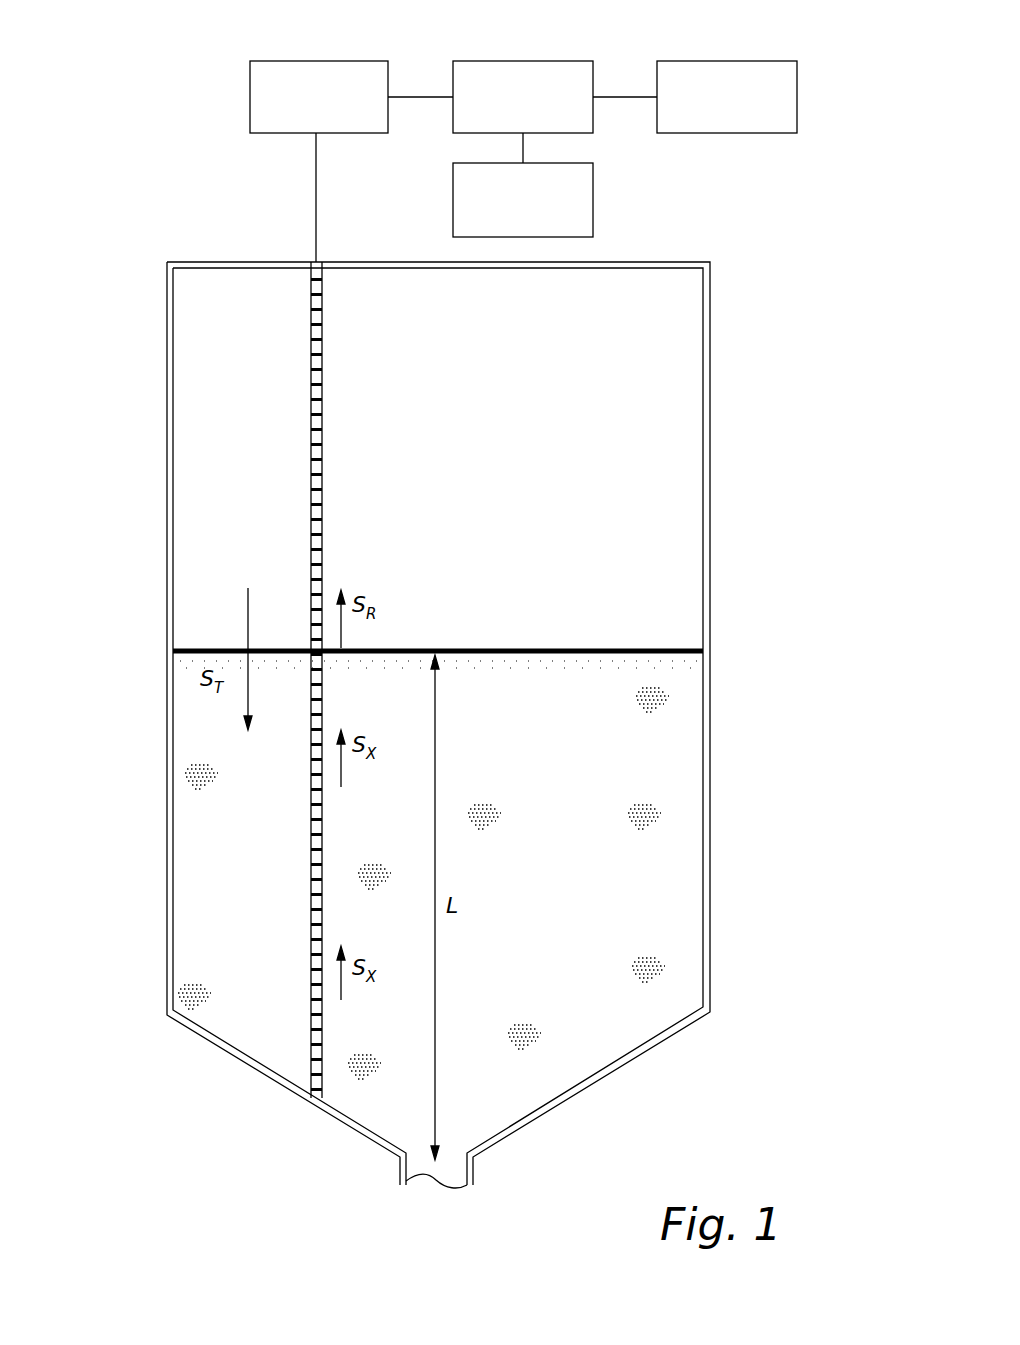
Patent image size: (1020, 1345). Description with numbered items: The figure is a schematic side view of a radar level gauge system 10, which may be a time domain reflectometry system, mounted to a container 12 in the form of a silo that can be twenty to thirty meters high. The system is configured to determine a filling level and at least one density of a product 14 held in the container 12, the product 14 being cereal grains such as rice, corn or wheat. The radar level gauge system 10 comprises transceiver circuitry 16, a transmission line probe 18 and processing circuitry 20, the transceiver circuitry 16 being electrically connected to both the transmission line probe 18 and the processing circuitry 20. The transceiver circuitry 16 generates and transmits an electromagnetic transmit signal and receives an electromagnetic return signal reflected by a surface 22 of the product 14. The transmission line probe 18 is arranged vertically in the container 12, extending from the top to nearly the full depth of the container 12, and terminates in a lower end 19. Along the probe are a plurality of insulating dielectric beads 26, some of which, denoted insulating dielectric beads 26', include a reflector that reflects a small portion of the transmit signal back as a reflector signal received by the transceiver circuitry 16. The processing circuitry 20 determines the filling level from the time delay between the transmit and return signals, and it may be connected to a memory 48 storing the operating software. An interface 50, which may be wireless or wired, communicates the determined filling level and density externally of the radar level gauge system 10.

The radar level gauge system 10 is at (230, 204).
The container 12 is at (708, 950).
The product 14 is at (568, 789).
The transceiver circuitry 16 is at (316, 68).
The transmission line probe 18 is at (330, 488).
The end 19 is at (312, 1098).
The processing circuitry 20 is at (532, 70).
The surface 22 is at (560, 648).
The insulating dielectric beads 26 is at (266, 630).
The insulating dielectric bead including a reflector 26' is at (266, 758).
The memory 48 is at (577, 212).
The interface 50 is at (716, 70).